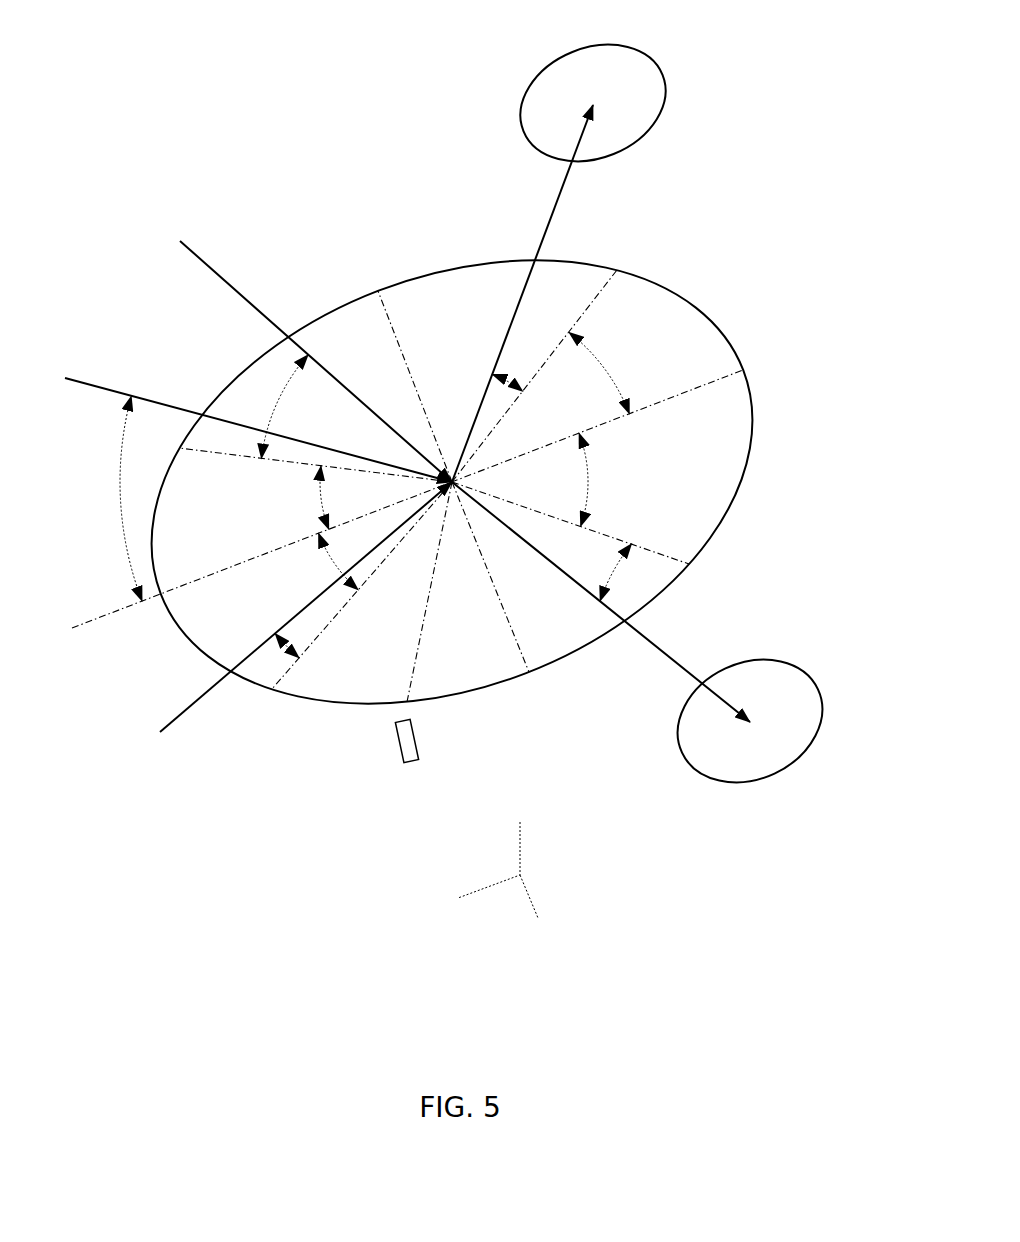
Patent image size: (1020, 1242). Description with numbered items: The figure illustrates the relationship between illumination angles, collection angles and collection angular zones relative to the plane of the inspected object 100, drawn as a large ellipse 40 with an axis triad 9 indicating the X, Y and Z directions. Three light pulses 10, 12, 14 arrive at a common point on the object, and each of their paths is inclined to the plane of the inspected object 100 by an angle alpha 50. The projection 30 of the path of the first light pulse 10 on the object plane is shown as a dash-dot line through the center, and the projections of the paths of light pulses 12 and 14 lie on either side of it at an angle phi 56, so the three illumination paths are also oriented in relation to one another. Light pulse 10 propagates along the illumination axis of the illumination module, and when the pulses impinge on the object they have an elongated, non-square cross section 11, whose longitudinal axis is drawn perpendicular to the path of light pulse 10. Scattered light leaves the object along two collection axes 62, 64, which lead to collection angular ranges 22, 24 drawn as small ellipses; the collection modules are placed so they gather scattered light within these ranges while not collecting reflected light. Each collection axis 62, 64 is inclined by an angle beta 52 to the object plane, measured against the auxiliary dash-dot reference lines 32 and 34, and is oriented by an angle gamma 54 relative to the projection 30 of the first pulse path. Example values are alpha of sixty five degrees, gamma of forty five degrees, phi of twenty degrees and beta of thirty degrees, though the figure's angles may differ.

The coordinate system 9 is at (493, 867).
The light pulse 10 is at (118, 397).
The elongated cross section 11 is at (418, 753).
The light pulse 12 is at (225, 278).
The light pulse 14 is at (200, 703).
The collection angular range 22 is at (520, 96).
The collection angular range 24 is at (810, 745).
The projection 30 is at (190, 582).
The first reference axis 32 is at (613, 277).
The second reference axis 34 is at (660, 549).
The sample surface 40 is at (700, 312).
The angle alpha 50 is at (197, 514).
The angle beta 52 is at (561, 462).
The angle gamma 54 is at (610, 429).
The angle phi 56 is at (331, 528).
The collection axis 62 is at (545, 238).
The collection axis 64 is at (660, 642).
The inspected object 100 is at (451, 482).